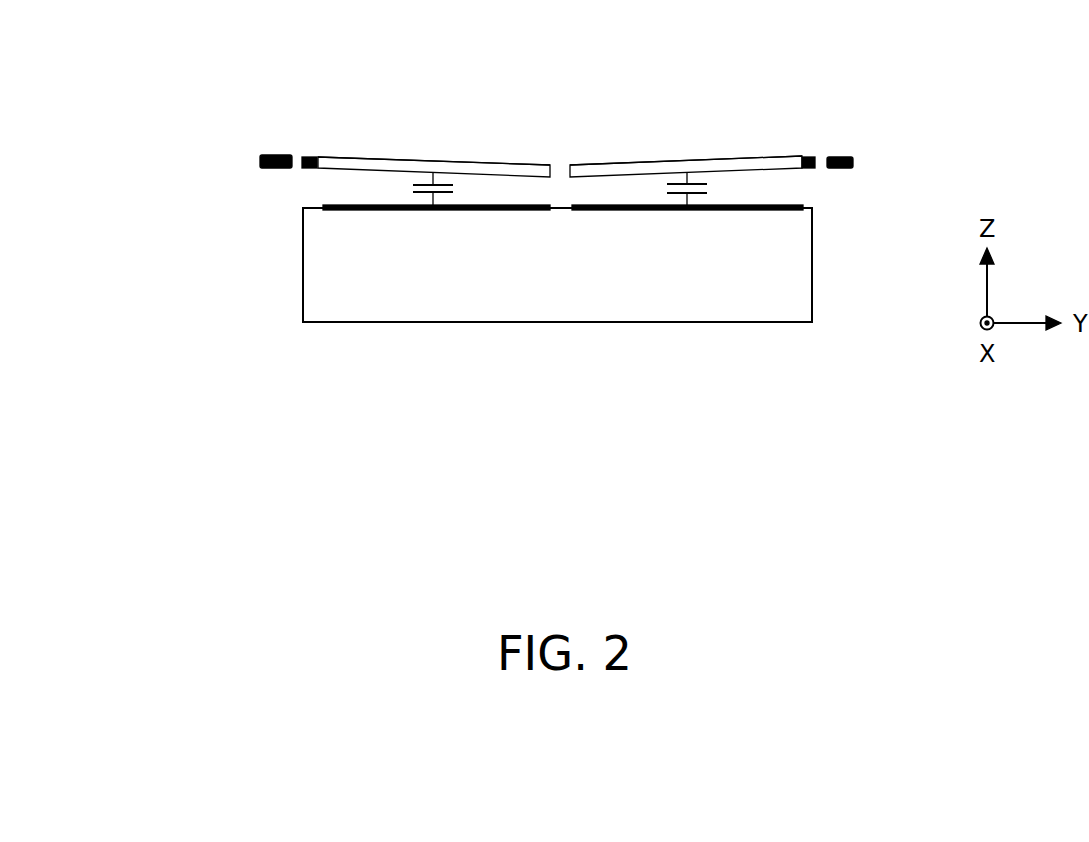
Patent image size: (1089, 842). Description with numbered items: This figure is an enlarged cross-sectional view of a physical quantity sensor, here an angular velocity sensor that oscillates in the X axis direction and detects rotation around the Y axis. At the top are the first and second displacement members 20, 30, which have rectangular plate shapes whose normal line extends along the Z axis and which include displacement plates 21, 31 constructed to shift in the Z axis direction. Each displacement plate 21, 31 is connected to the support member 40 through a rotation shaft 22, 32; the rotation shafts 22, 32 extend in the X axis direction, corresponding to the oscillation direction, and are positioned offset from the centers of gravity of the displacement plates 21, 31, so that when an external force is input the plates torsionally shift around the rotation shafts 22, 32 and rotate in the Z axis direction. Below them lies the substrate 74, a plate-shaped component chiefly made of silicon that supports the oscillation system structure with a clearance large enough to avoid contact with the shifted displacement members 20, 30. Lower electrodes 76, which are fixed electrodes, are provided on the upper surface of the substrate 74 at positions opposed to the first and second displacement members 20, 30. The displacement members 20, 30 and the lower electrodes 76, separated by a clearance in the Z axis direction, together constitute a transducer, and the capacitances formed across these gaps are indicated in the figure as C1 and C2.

The first displacement member 20 is at (368, 140).
The displacement plate 21 is at (507, 163).
The rotation shaft 22 is at (307, 155).
The second displacement member 30 is at (742, 140).
The displacement plate 31 is at (612, 163).
The rotation shaft 32 is at (803, 155).
The support member 40 is at (185, 215).
The substrate 74 is at (800, 269).
The lower electrodes 76 is at (319, 201).
The first capacitance C1 is at (415, 188).
The second capacitance C2 is at (705, 188).